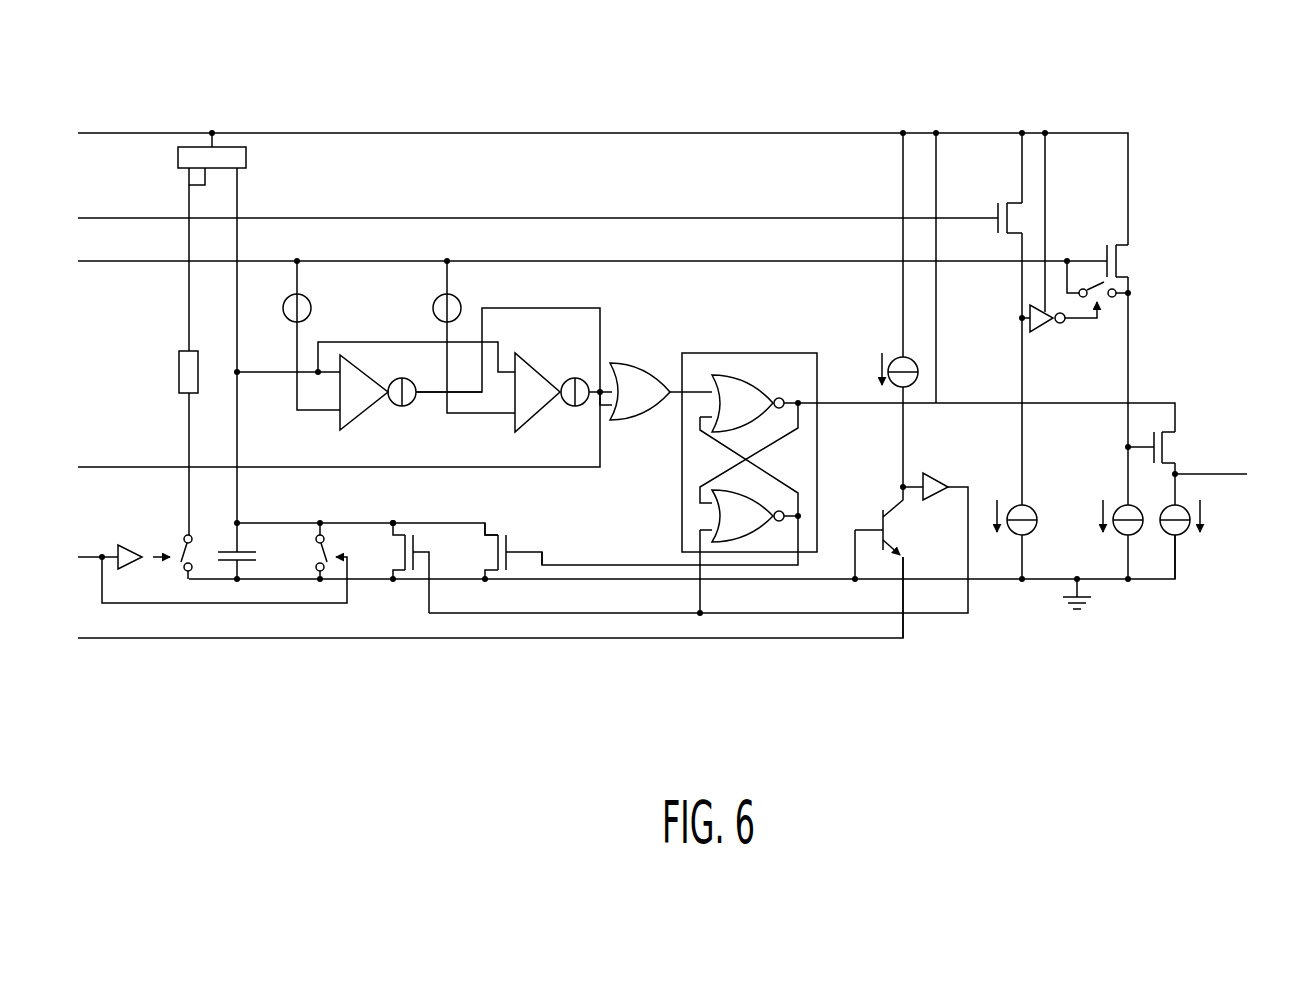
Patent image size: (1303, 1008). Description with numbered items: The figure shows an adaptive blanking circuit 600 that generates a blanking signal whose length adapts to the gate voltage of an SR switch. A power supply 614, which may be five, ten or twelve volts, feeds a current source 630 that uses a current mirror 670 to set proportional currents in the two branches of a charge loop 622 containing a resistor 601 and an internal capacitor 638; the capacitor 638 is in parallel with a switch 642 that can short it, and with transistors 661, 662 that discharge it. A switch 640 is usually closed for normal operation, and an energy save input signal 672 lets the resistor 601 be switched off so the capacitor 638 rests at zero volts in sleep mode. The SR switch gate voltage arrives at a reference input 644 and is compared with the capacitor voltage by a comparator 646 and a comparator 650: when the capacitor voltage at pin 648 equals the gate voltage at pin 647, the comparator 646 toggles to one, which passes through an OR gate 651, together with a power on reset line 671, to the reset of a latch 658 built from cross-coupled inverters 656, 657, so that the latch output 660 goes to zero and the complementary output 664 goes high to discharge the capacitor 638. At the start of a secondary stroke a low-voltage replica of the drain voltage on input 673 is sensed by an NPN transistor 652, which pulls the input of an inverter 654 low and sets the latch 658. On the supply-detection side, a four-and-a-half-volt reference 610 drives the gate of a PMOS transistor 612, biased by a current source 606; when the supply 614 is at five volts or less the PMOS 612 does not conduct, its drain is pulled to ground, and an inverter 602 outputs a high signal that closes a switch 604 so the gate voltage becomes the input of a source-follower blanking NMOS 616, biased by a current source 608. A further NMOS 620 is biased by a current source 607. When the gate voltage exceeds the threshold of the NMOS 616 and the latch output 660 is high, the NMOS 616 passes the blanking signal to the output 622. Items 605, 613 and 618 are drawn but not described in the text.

The adaptive blanking circuit 600 is at (1242, 138).
The resistor 601 is at (179, 372).
The inverter 602 is at (1043, 330).
The switch 604 is at (1131, 294).
The switch 605 is at (1119, 283).
The current source 606 is at (1028, 535).
The current source 607 is at (1130, 535).
The current source 608 is at (1182, 535).
The reference voltage 610 is at (110, 217).
The PMOS transistor 612 is at (1022, 203).
The supply line 613 is at (1020, 250).
The power supply 614 is at (105, 132).
The blanking NMOS transistor 616 is at (1180, 441).
The source terminal 618 is at (1143, 463).
The NMOS transistor 620 is at (1142, 253).
The charge loop / blanking signal output 622 is at (238, 200).
The current source 630 is at (228, 157).
The internal capacitor 638 is at (222, 565).
The switch 640 is at (171, 581).
The switch 642 is at (334, 581).
The reference input of SR switch gate voltage 644 is at (120, 263).
The comparator 646 is at (397, 415).
The gate voltage pin 647 is at (342, 415).
The capacitor voltage pin 648 is at (340, 350).
The comparator 650 is at (540, 362).
The OR gate 651 is at (655, 418).
The NPN transistor 652 is at (905, 545).
The inverter 654 is at (940, 500).
The cross-coupled inverter 656 is at (694, 375).
The cross-coupled inverter 657 is at (748, 372).
The latch 658 is at (803, 355).
The latch Q output 660 is at (842, 408).
The transistor 661 is at (404, 600).
The transistor 662 is at (506, 601).
The latch output 664 is at (757, 566).
The current mirror 670 is at (190, 177).
The power on reset line 671 is at (113, 466).
The energy save input signal 672 is at (83, 557).
The drain voltage input 673 is at (110, 638).